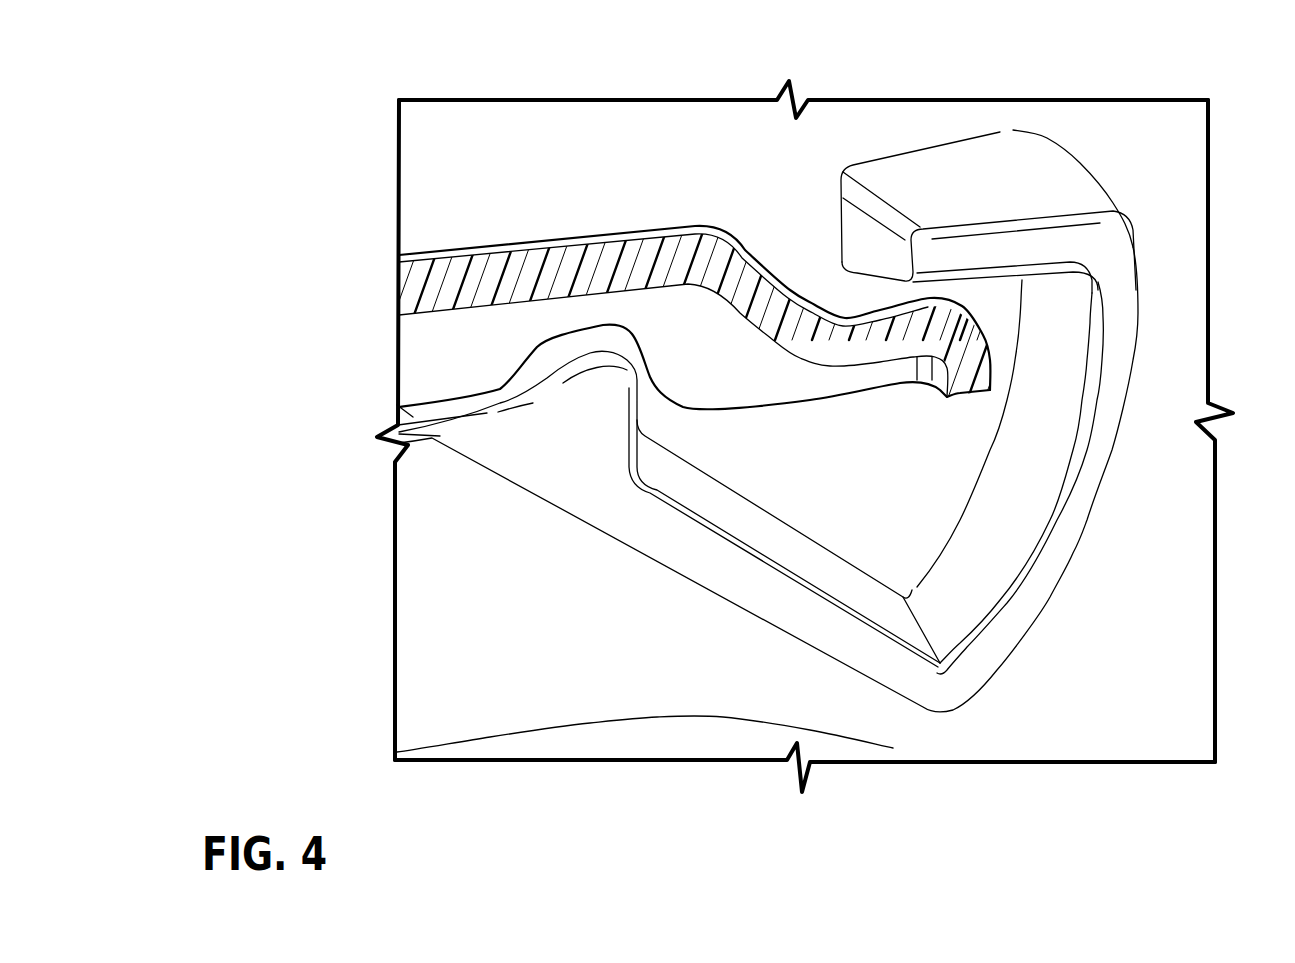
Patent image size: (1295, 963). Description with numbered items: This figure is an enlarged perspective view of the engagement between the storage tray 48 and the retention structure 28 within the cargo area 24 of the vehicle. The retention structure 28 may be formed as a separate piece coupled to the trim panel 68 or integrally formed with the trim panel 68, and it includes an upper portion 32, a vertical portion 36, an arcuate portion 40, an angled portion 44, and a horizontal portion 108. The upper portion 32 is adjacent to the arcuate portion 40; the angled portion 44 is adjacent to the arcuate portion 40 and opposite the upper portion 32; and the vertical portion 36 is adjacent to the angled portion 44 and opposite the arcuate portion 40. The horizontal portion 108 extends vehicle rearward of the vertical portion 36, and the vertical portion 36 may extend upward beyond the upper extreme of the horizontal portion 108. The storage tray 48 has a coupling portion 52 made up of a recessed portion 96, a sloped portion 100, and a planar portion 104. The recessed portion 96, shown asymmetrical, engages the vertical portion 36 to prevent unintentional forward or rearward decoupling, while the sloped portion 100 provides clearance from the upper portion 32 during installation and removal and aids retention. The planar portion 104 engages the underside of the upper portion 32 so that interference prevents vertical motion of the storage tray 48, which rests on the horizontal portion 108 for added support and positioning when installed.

The cargo area 24 is at (320, 235).
The retention structure 28 is at (966, 708).
The upper portion 32 is at (965, 173).
The vertical portion 36 is at (627, 412).
The arcuate portion 40 is at (1117, 365).
The angled portion 44 is at (687, 482).
The storage tray 48 is at (437, 351).
The coupling portion 52 is at (627, 327).
The trim panel 68 is at (1153, 175).
The recessed portion 96 is at (672, 306).
The sloped portion 100 is at (763, 258).
The planar portion 104 is at (883, 313).
The horizontal portion 108 is at (397, 405).